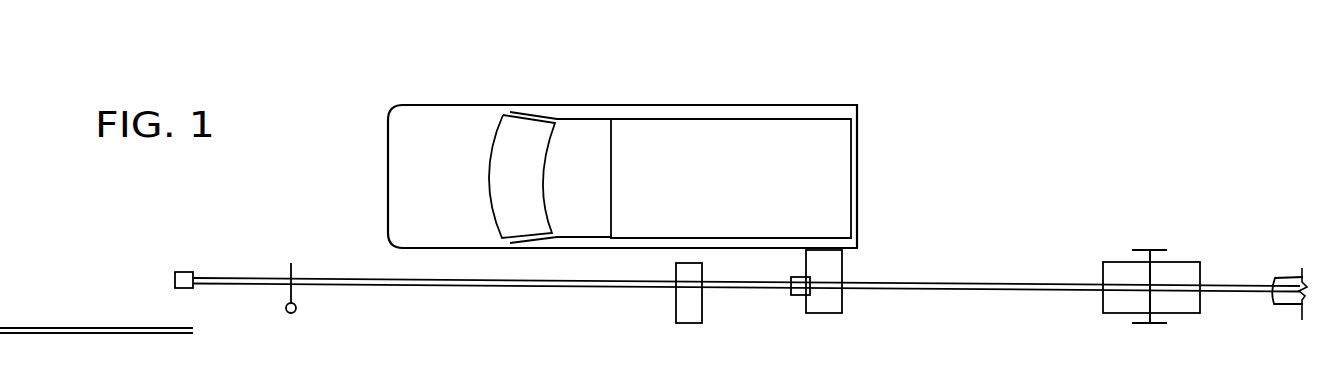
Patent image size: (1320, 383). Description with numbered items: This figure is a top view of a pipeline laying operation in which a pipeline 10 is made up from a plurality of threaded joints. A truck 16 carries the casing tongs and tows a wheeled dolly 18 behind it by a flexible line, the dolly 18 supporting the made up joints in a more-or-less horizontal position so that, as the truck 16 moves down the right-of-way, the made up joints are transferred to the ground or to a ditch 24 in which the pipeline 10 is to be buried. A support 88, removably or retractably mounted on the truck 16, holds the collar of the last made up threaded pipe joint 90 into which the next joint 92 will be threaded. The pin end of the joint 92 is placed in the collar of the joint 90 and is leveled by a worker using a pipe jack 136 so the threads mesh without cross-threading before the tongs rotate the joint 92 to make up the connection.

The pipeline 10 is at (1030, 263).
The truck 16 is at (850, 101).
The wheeled dolly 18 is at (1188, 245).
The ditch 24 is at (1291, 284).
The support 88 is at (852, 262).
The threaded pipe joint 90 is at (978, 287).
The joint 92 is at (361, 278).
The pipe jack 136 is at (297, 307).